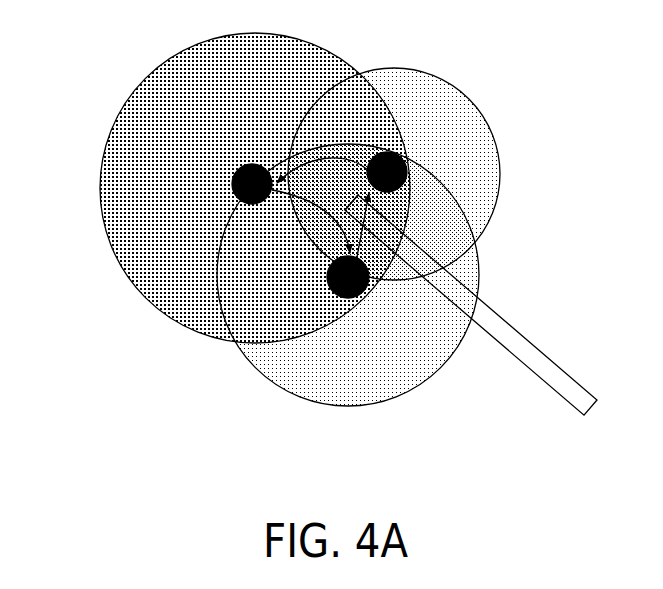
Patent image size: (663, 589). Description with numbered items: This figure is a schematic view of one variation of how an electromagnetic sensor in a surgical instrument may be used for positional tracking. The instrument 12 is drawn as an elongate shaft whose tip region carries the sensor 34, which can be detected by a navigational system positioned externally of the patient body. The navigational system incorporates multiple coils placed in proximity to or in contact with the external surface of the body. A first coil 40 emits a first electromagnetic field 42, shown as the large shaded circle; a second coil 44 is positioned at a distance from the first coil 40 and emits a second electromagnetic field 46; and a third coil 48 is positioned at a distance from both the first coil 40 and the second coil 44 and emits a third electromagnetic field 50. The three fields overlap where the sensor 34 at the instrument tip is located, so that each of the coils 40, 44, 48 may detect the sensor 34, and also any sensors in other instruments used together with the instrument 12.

The elongate instrument 12 is at (522, 362).
The sensor 34 is at (367, 213).
The first coil 40 is at (232, 187).
The first electromagnetic field 42 is at (112, 130).
The second coil 44 is at (390, 150).
The second electromagnetic field 46 is at (463, 92).
The third coil 48 is at (353, 300).
The third electromagnetic field 50 is at (381, 396).